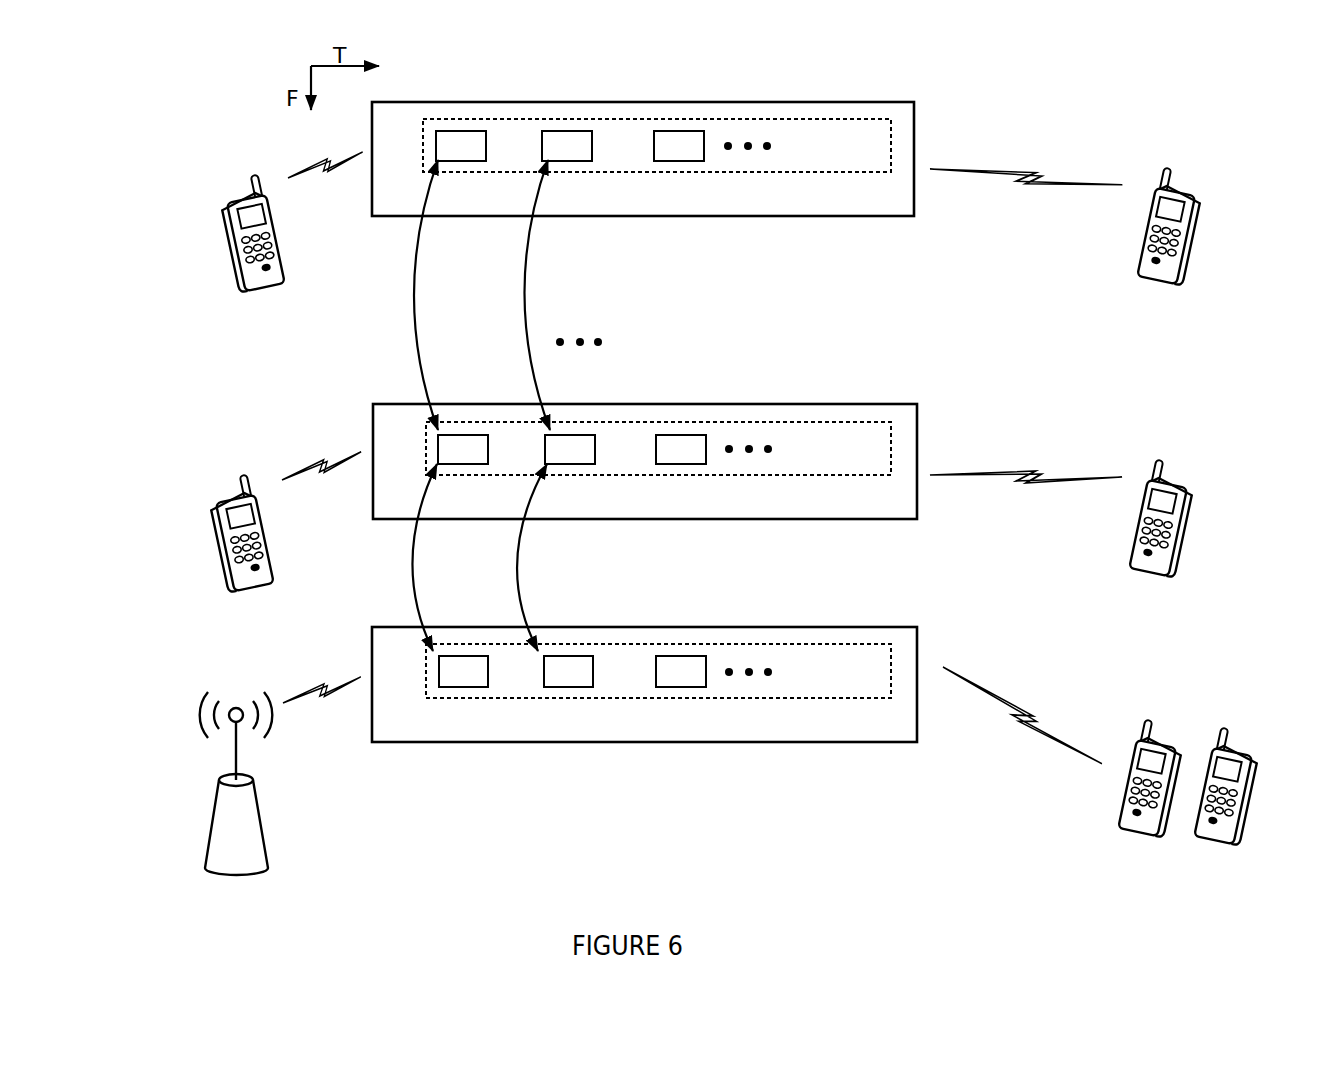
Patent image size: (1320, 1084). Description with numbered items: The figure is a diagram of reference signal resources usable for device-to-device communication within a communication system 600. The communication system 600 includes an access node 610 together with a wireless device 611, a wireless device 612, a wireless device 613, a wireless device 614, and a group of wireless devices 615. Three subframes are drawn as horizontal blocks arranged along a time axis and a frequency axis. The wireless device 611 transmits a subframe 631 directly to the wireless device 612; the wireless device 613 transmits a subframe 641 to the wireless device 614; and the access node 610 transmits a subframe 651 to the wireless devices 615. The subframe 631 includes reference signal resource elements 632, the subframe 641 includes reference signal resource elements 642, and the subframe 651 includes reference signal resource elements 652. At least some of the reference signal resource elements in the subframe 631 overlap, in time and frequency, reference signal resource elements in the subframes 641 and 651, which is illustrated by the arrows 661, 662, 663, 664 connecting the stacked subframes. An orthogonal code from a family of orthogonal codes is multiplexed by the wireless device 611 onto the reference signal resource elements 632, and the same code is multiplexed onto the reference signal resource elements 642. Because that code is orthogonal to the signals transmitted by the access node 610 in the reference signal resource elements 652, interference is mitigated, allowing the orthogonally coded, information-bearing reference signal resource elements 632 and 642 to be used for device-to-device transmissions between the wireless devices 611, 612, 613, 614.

The communication system 600 is at (1197, 85).
The access node 610 is at (217, 870).
The wireless device 611 is at (237, 290).
The wireless device 612 is at (1183, 283).
The wireless device 613 is at (237, 590).
The wireless device 614 is at (1177, 575).
The wireless devices 615 is at (1268, 845).
The subframe 631 is at (877, 102).
The reference signal resource elements 632 is at (657, 145).
The subframe 641 is at (883, 404).
The reference signal resource elements 642 is at (658, 448).
The subframe 651 is at (886, 627).
The reference signal resource elements 652 is at (658, 671).
The arrow 661 is at (413, 309).
The arrow 662 is at (524, 303).
The arrow 663 is at (412, 556).
The arrow 664 is at (517, 560).